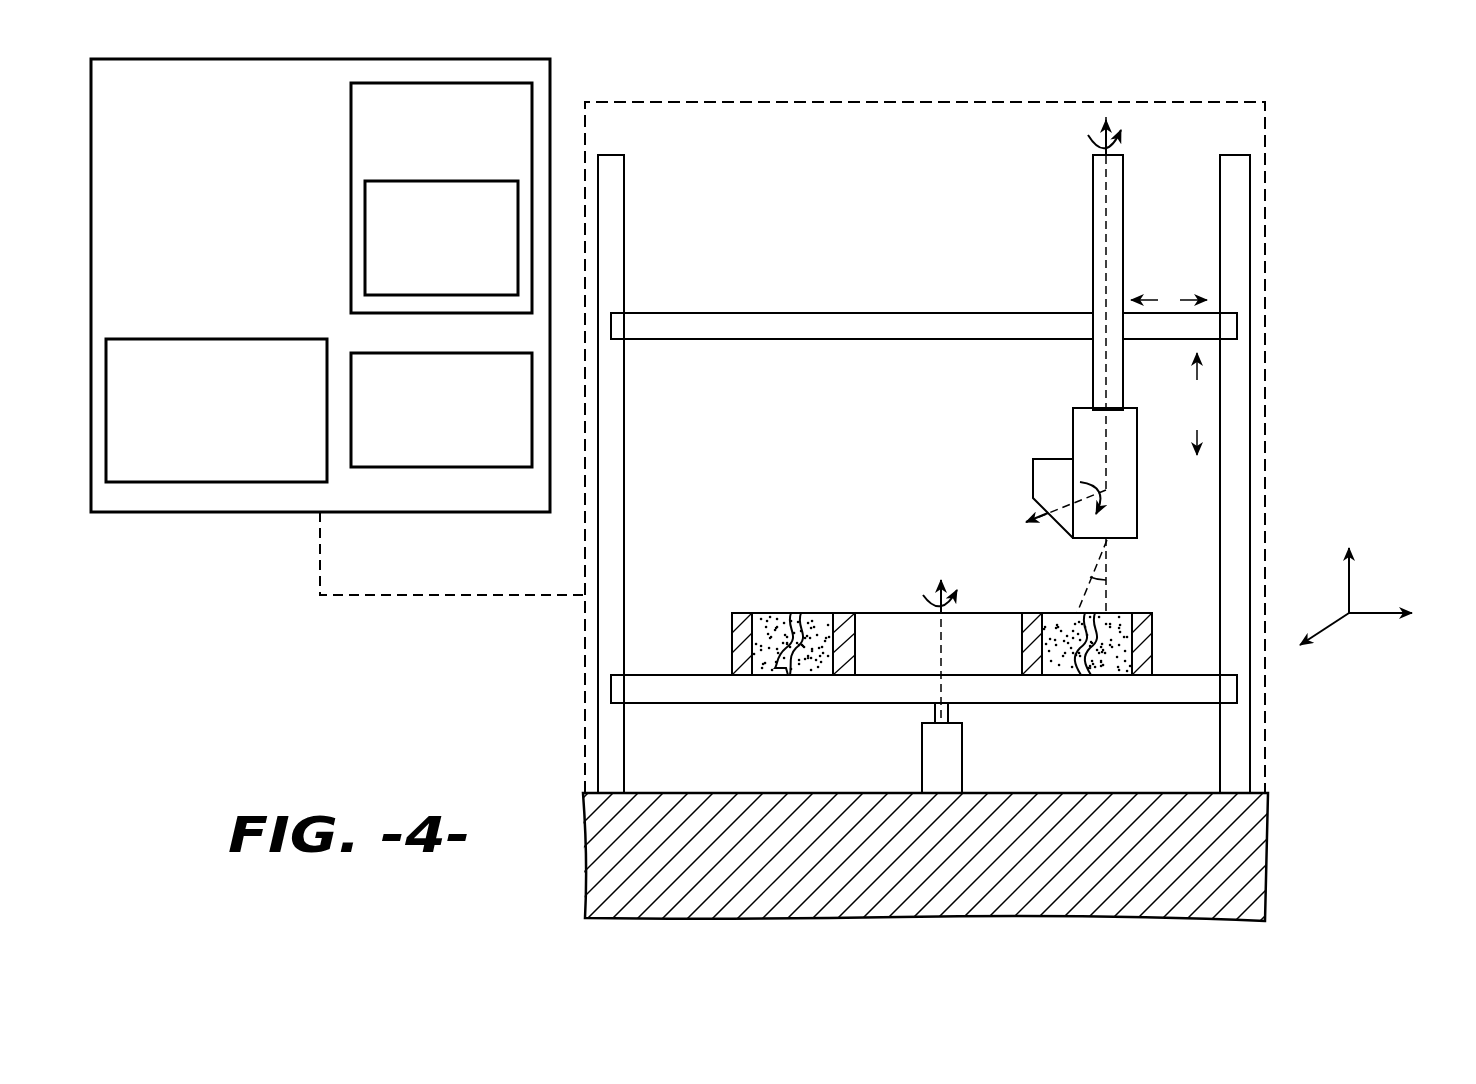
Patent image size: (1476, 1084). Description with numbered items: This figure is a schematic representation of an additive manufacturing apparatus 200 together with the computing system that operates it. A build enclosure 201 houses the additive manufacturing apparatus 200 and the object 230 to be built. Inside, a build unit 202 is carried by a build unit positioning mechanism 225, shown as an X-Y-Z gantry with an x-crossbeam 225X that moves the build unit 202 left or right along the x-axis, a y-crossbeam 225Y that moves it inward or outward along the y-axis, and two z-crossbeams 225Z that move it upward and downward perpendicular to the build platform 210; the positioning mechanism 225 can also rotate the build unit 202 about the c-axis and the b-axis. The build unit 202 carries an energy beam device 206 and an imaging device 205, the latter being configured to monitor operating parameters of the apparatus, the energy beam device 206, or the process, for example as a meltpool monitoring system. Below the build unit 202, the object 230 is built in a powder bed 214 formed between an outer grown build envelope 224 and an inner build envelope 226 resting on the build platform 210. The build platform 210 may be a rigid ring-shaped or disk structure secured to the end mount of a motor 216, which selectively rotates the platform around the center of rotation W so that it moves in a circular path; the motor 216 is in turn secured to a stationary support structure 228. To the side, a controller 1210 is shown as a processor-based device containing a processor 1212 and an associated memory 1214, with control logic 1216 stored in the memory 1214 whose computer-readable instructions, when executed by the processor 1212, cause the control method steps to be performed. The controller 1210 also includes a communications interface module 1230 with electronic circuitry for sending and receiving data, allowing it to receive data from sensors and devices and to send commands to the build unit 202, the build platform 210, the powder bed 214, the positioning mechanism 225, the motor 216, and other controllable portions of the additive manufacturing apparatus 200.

The additive manufacturing apparatus 200 is at (959, 483).
The build enclosure 201 is at (757, 100).
The build unit 202 is at (1073, 425).
The imaging device 205 is at (1006, 477).
The energy beam device 206 is at (1155, 523).
The build platform 210 is at (1177, 693).
The powder bed 214 is at (928, 651).
The motor 216 is at (963, 748).
The outer grown build envelope 224 is at (738, 648).
The build unit positioning mechanism 225 is at (982, 441).
The x-crossbeam 225X is at (1237, 326).
The y-crossbeam 225Y is at (1096, 238).
The z-crossbeam 225Z is at (611, 237).
The inner build envelope 226 is at (845, 635).
The stationary support structure 228 is at (1237, 866).
The object 230 is at (796, 610).
The controller 1210 is at (241, 227).
The processor 1212 is at (410, 441).
The memory 1214 is at (410, 166).
The control logic 1216 is at (410, 280).
The communications interface module 1230 is at (186, 457).